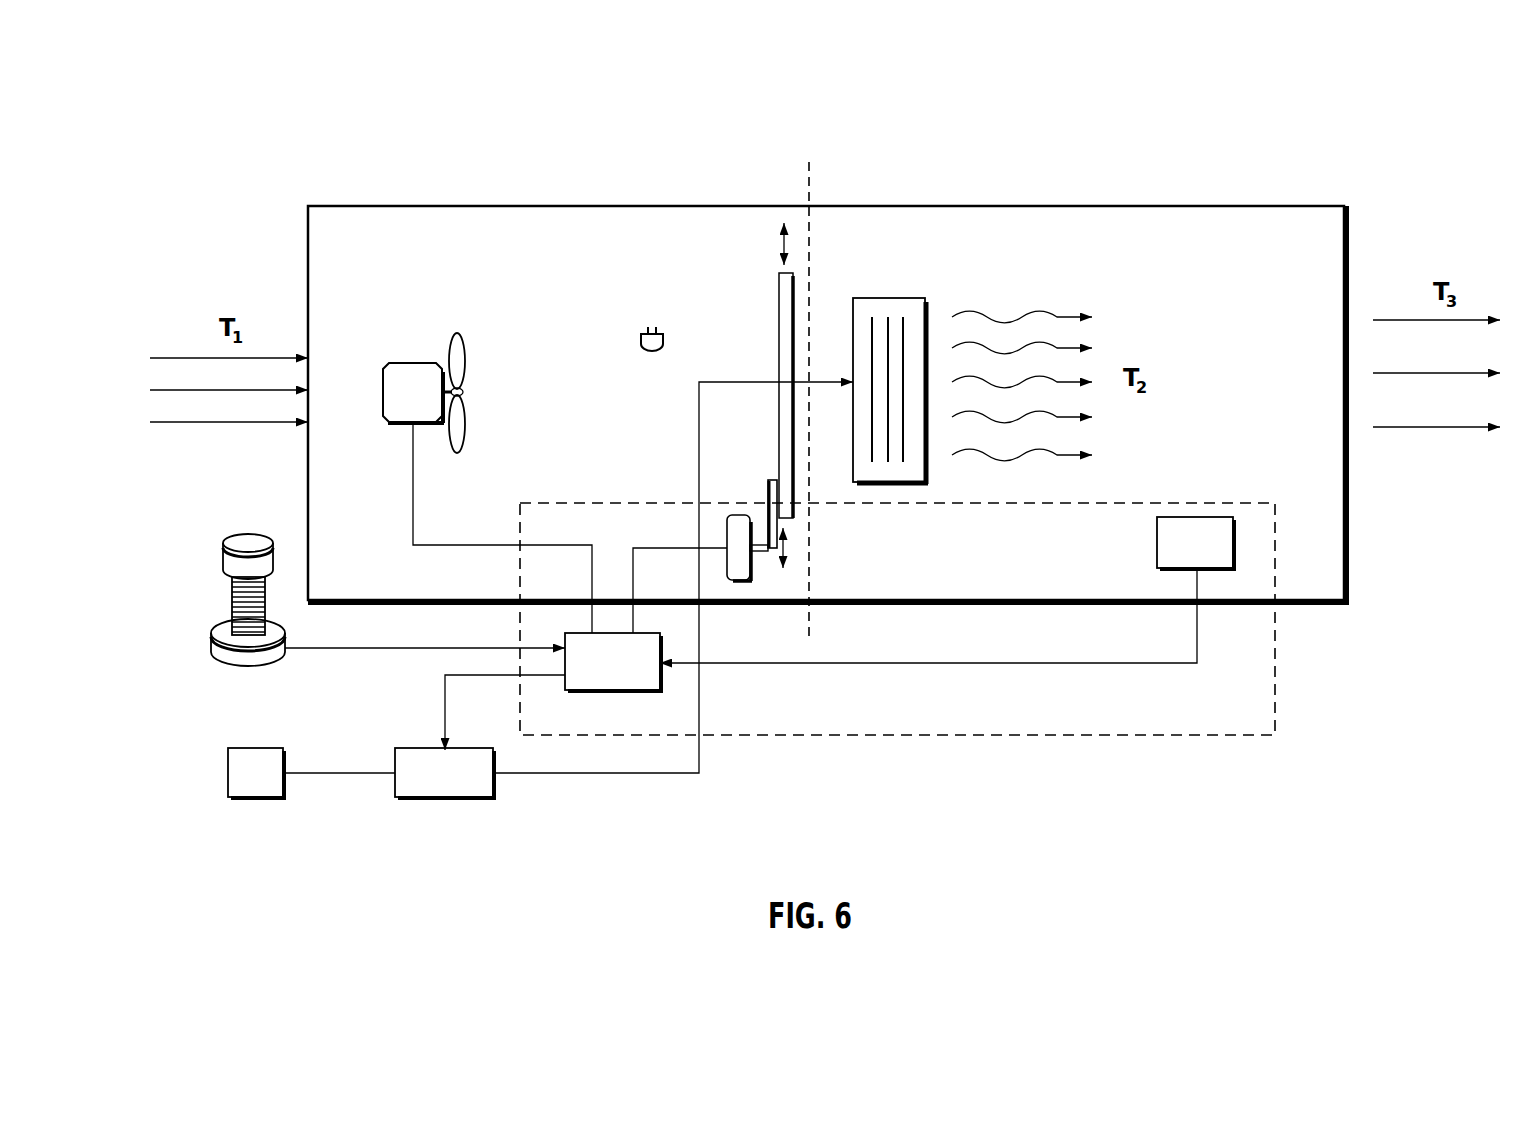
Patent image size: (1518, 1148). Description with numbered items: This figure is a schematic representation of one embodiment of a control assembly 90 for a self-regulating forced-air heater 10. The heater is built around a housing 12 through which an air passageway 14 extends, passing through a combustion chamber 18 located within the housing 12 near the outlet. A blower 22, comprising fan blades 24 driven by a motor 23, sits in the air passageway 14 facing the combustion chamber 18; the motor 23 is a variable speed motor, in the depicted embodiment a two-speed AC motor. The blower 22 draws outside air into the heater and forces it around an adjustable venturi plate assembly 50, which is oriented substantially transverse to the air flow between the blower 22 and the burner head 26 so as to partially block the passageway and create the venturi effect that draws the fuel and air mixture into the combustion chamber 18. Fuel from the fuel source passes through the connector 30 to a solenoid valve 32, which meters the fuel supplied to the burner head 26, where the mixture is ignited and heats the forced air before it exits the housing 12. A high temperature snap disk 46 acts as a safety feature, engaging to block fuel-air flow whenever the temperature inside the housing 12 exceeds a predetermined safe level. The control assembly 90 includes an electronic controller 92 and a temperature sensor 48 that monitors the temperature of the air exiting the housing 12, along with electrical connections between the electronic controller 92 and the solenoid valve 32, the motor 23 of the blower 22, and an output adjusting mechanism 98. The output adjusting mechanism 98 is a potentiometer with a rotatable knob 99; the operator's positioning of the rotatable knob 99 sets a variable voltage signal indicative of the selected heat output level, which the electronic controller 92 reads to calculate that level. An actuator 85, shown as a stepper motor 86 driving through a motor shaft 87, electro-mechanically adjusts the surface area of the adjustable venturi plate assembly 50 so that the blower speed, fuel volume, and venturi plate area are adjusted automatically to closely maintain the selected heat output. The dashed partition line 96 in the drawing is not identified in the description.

The self-regulating forced-air heater 10 is at (828, 366).
The housing 12 is at (513, 206).
The air passageway 14 is at (569, 301).
The combustion chamber 18 is at (1270, 390).
The blower 22 is at (423, 404).
The motor 23 is at (406, 360).
The fan blades 24 is at (458, 360).
The burner head 26 is at (913, 327).
The connector 30 is at (238, 762).
The solenoid valve 32 is at (423, 750).
The high temperature snap disk 46 is at (641, 339).
The temperature sensor 48 is at (1157, 548).
The adjustable venturi plate assembly 50 is at (779, 322).
The actuator 85 is at (754, 553).
The stepper motor 86 is at (740, 515).
The motor shaft 87 is at (763, 553).
The control assembly 90 is at (863, 737).
The electronic controller 92 is at (614, 681).
The partition plane 96 is at (811, 190).
The output adjusting mechanism 98 is at (224, 632).
The rotatable knob 99 is at (246, 541).